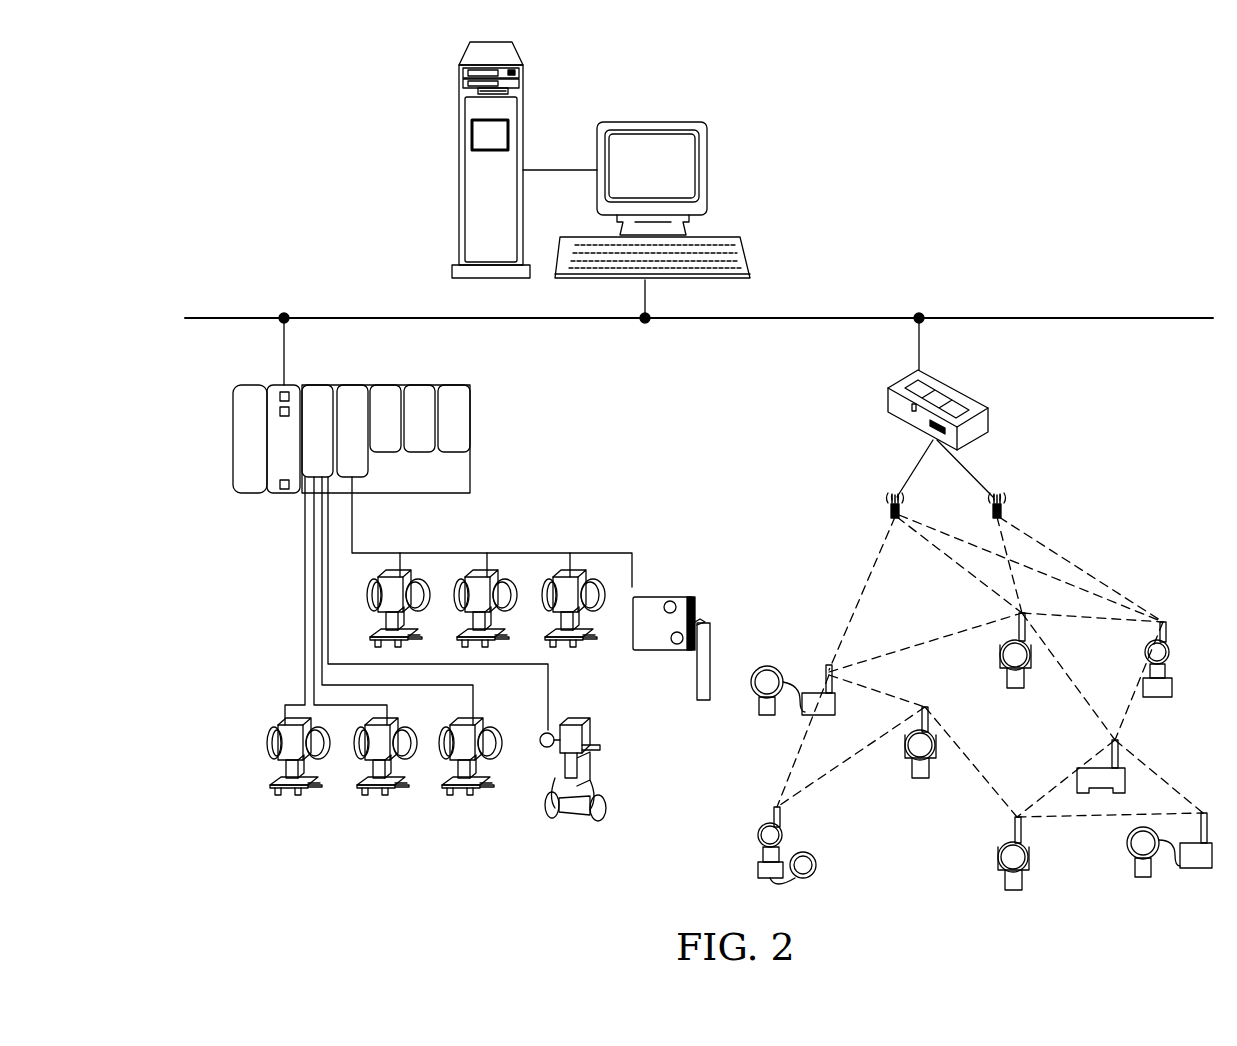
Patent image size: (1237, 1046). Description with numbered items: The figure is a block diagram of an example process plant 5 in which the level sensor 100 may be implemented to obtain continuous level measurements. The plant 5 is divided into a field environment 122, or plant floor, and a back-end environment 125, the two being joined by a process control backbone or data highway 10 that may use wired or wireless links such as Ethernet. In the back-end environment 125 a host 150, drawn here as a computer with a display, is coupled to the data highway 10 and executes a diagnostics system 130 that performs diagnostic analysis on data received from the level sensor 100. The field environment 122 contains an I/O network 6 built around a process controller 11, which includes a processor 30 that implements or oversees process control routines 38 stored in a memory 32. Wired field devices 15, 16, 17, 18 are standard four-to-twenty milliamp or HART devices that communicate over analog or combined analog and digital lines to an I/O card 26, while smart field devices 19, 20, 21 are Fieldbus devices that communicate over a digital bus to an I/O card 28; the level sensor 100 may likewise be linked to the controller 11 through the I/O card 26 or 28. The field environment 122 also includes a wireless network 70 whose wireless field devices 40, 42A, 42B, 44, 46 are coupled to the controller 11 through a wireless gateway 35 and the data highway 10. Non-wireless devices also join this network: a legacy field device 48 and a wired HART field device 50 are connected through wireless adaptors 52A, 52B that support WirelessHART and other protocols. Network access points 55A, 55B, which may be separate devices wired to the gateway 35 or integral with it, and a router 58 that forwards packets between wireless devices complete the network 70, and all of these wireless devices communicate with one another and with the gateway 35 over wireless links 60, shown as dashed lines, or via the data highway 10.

The process plant 5 is at (918, 197).
The I/O network 6 is at (565, 477).
The process control backbone or data highway 10 is at (720, 318).
The process controller 11 is at (275, 387).
The wired field device 15 is at (270, 760).
The wired field device 16 is at (355, 768).
The wired field device 17 is at (440, 768).
The wired field device 18 is at (550, 768).
The smart field device 19 is at (408, 575).
The smart field device 20 is at (495, 575).
The smart field device 21 is at (578, 575).
The I/O card 26 is at (313, 390).
The I/O card 28 is at (358, 390).
The processor 30 is at (280, 396).
The memory 32 is at (280, 412).
The wireless gateway 35 is at (990, 417).
The process control routines 38 is at (280, 488).
The wireless field device 40 is at (816, 865).
The wireless field device 42A is at (907, 757).
The wireless field device 42B is at (1000, 665).
The wireless field device 44 is at (998, 857).
The wireless field device 46 is at (1172, 688).
The field device 48 is at (763, 666).
The field device 50 is at (1125, 842).
The wireless adaptor 52A is at (803, 718).
The wireless adaptor 52B is at (1198, 870).
The network access point 55A is at (888, 510).
The network access point 55B is at (1005, 510).
The router 58 is at (1097, 772).
The wireless links 60 is at (1180, 764).
The wireless network 70 is at (1108, 560).
The level sensor 100 is at (667, 597).
The field environment 122 is at (1140, 403).
The back-end environment 125 is at (1140, 261).
The diagnostics system 130 is at (472, 137).
The host 150 is at (707, 170).